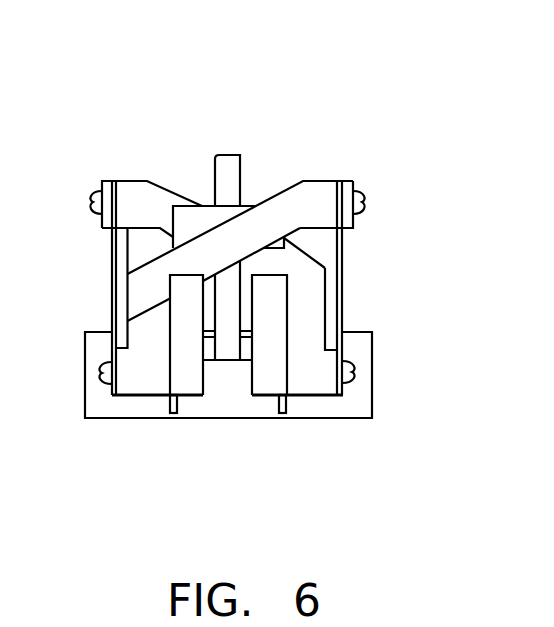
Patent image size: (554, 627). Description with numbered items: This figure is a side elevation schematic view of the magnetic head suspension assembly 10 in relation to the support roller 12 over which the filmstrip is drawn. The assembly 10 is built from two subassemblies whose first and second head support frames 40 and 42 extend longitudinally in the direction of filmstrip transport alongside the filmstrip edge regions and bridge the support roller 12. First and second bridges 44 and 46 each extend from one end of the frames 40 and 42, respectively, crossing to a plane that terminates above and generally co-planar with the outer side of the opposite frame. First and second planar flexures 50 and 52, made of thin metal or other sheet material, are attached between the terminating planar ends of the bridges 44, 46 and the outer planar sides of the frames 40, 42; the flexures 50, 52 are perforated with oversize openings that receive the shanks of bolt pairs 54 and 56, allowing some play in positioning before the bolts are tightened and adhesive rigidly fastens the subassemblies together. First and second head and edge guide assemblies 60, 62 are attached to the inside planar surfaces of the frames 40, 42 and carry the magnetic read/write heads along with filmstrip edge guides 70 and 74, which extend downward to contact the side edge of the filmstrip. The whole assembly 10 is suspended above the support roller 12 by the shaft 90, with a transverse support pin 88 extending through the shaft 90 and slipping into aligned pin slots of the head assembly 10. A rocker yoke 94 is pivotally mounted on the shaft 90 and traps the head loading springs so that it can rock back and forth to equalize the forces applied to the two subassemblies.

The magnetic head suspension assembly 10 is at (366, 110).
The support roller 12 is at (84, 392).
The first head support frame 40 is at (318, 398).
The second head support frame 42 is at (133, 397).
The first bridge 44 is at (147, 183).
The second bridge 46 is at (297, 185).
The first planar flexure 50 is at (112, 293).
The second planar flexure 52 is at (343, 290).
The first bolt pair 54 is at (92, 192).
The second bolt pair 56 is at (355, 372).
The first head and edge guide assembly 60 is at (273, 403).
The second head and edge guide assembly 62 is at (193, 400).
The filmstrip edge guide 70 is at (180, 418).
The filmstrip edge guide 74 is at (285, 415).
The transverse support pin 88 is at (240, 362).
The shaft 90 is at (233, 153).
The rocker yoke 94 is at (195, 204).